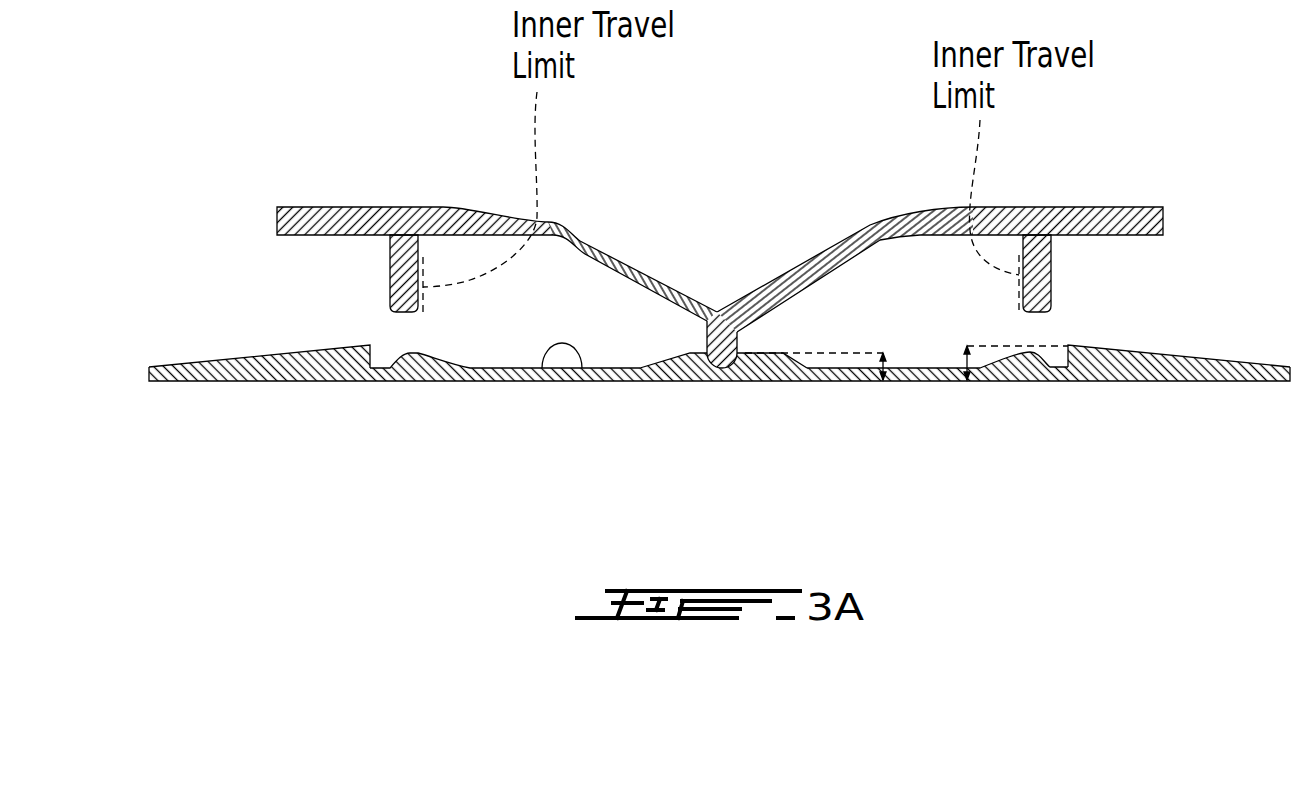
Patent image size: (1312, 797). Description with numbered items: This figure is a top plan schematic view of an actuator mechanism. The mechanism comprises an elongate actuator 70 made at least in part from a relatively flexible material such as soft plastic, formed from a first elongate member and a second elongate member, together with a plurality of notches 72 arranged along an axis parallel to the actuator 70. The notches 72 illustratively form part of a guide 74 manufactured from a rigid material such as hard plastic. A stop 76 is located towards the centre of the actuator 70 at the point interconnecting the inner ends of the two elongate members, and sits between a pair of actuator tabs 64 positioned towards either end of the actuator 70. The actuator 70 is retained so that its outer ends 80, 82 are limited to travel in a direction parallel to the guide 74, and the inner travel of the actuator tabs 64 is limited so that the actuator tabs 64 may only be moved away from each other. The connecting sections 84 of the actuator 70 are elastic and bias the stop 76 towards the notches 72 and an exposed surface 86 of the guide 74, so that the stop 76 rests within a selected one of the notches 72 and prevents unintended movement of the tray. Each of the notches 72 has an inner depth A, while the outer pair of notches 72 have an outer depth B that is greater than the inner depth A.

The actuator tab 64 is at (400, 271).
The actuator 70 is at (492, 212).
The notch 72 is at (378, 372).
The guide 74 is at (472, 382).
The stop 76 is at (723, 340).
The outer end 80 is at (277, 212).
The outer end 82 is at (1140, 219).
The connecting section 84 is at (620, 252).
The exposed surface 86 is at (547, 370).
The inner depth A is at (893, 370).
The outer depth B is at (988, 370).